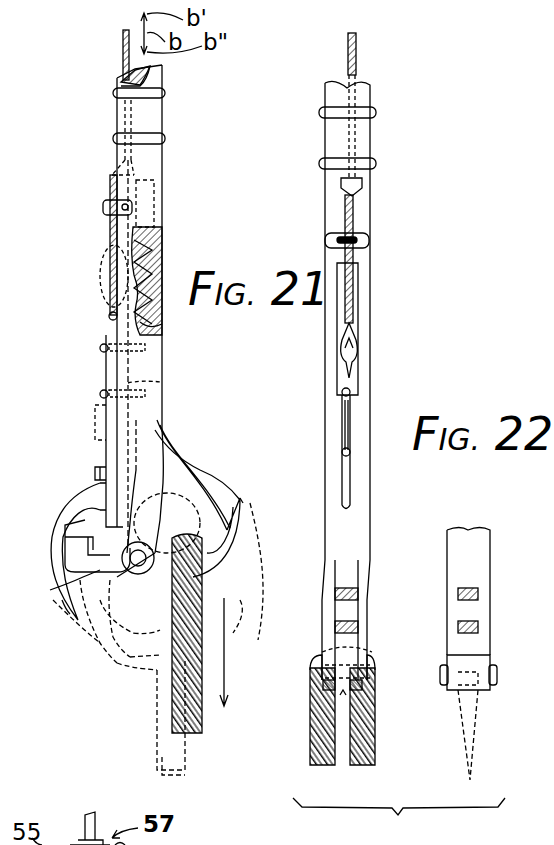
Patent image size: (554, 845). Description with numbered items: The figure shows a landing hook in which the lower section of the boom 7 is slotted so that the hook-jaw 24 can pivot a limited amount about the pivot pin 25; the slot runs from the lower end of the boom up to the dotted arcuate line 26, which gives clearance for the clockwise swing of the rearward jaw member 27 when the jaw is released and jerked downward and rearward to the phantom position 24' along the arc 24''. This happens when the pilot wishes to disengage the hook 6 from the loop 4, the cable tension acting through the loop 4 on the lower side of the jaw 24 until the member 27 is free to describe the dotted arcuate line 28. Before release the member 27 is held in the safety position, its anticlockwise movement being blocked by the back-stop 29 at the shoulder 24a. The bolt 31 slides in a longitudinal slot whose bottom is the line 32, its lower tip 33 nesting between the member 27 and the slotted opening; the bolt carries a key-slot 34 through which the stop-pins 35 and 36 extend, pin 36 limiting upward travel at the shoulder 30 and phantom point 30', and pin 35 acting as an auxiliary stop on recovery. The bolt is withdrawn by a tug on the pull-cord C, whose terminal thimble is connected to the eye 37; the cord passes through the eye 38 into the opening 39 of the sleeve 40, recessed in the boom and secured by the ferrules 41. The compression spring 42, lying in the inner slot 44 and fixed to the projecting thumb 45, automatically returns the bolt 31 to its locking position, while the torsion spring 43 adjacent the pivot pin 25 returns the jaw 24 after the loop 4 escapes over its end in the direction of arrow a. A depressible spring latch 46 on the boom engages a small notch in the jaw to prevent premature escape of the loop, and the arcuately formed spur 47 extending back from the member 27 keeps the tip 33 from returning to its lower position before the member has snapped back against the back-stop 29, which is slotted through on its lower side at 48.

In FIG. 21, the loop 4 is at (200, 606).
In FIG. 21, the hook 6 is at (248, 532).
In FIG. 21, the boom 7 is at (176, 146).
In FIG. 21, the hook-jaw 24 is at (205, 535).
In FIG. 21, the shoulder 24a is at (65, 543).
In FIG. 21, the phantom position 24' is at (147, 594).
In FIG. 21, the arc 24'' is at (277, 571).
In FIG. 21, the pivot pin 25 is at (138, 574).
In FIG. 22, the pivot pin 25 is at (496, 680).
In FIG. 21, the dotted arcuate line 26 is at (160, 447).
In FIG. 21, the rearward jaw member 27 is at (82, 492).
In FIG. 22, the rearward jaw member 27 is at (478, 616).
In FIG. 21, the dotted arcuate line 28 is at (195, 482).
In FIG. 21, the back-stop 29 is at (85, 560).
In FIG. 22, the back-stop 29 is at (490, 672).
In FIG. 21, the shoulder 30 is at (68, 465).
In FIG. 21, the phantom point 30' is at (74, 422).
In FIG. 21, the bolt 31 is at (94, 368).
In FIG. 22, the bolt 31 is at (370, 520).
In FIG. 21, the line 32 is at (162, 382).
In FIG. 21, the lower tip 33 is at (112, 512).
In FIG. 22, the key-slot 34 is at (346, 426).
In FIG. 21, the stop-pin 35 is at (101, 346).
In FIG. 22, the stop-pin 35 is at (342, 393).
In FIG. 21, the stop-pin 36 is at (101, 393).
In FIG. 22, the stop-pin 36 is at (343, 455).
In FIG. 21, the eye 37 is at (108, 312).
In FIG. 22, the eye 37 is at (355, 345).
In FIG. 21, the eye 38 is at (103, 207).
In FIG. 22, the eye 38 is at (325, 240).
In FIG. 21, the opening 39 is at (110, 178).
In FIG. 22, the opening 39 is at (358, 195).
In FIG. 21, the sleeve 40 is at (122, 76).
In FIG. 22, the sleeve 40 is at (348, 136).
In FIG. 21, the ferrules 41 is at (148, 94).
In FIG. 22, the ferrules 41 is at (368, 166).
In FIG. 21, the compression spring 42 is at (152, 244).
In FIG. 21, the torsion spring 43 is at (60, 588).
In FIG. 21, the inner slot 44 is at (155, 195).
In FIG. 21, the thumb 45 is at (155, 326).
In FIG. 21, the spring latch 46 is at (190, 455).
In FIG. 21, the spur 47 is at (62, 613).
In FIG. 22, the spur 47 is at (478, 590).
In FIG. 22, the slot 48 is at (370, 733).
In FIG. 21, the pull-cord C is at (110, 240).
In FIG. 22, the pull-cord C is at (358, 258).
In FIG. 21, the arrow a is at (226, 696).